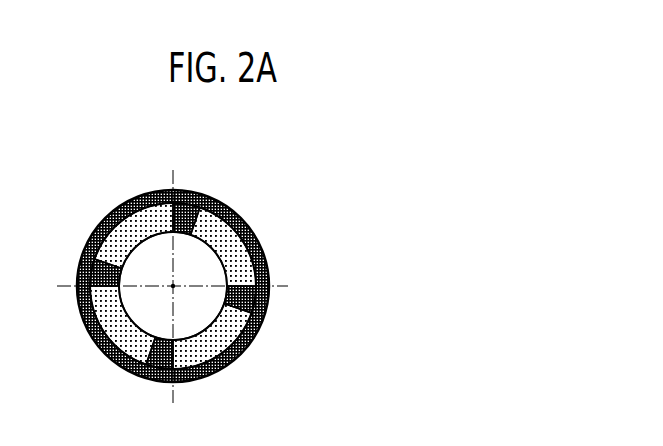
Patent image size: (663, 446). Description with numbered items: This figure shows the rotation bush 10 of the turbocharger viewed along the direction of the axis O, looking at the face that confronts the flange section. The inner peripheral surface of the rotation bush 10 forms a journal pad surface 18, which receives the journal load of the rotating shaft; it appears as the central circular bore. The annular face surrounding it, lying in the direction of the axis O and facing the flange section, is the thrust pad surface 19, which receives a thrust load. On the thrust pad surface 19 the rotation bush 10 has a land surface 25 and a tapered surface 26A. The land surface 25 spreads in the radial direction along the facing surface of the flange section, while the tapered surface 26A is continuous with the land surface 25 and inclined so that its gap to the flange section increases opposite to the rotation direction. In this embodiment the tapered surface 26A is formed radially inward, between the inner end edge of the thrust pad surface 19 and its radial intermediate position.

The rotation bush 10 is at (117, 182).
The thrust pad surface 19 is at (221, 259).
The land surface 25 is at (190, 202).
The tapered surface 26A is at (225, 236).
The journal pad surface 18 is at (226, 294).
The axis O is at (173, 286).